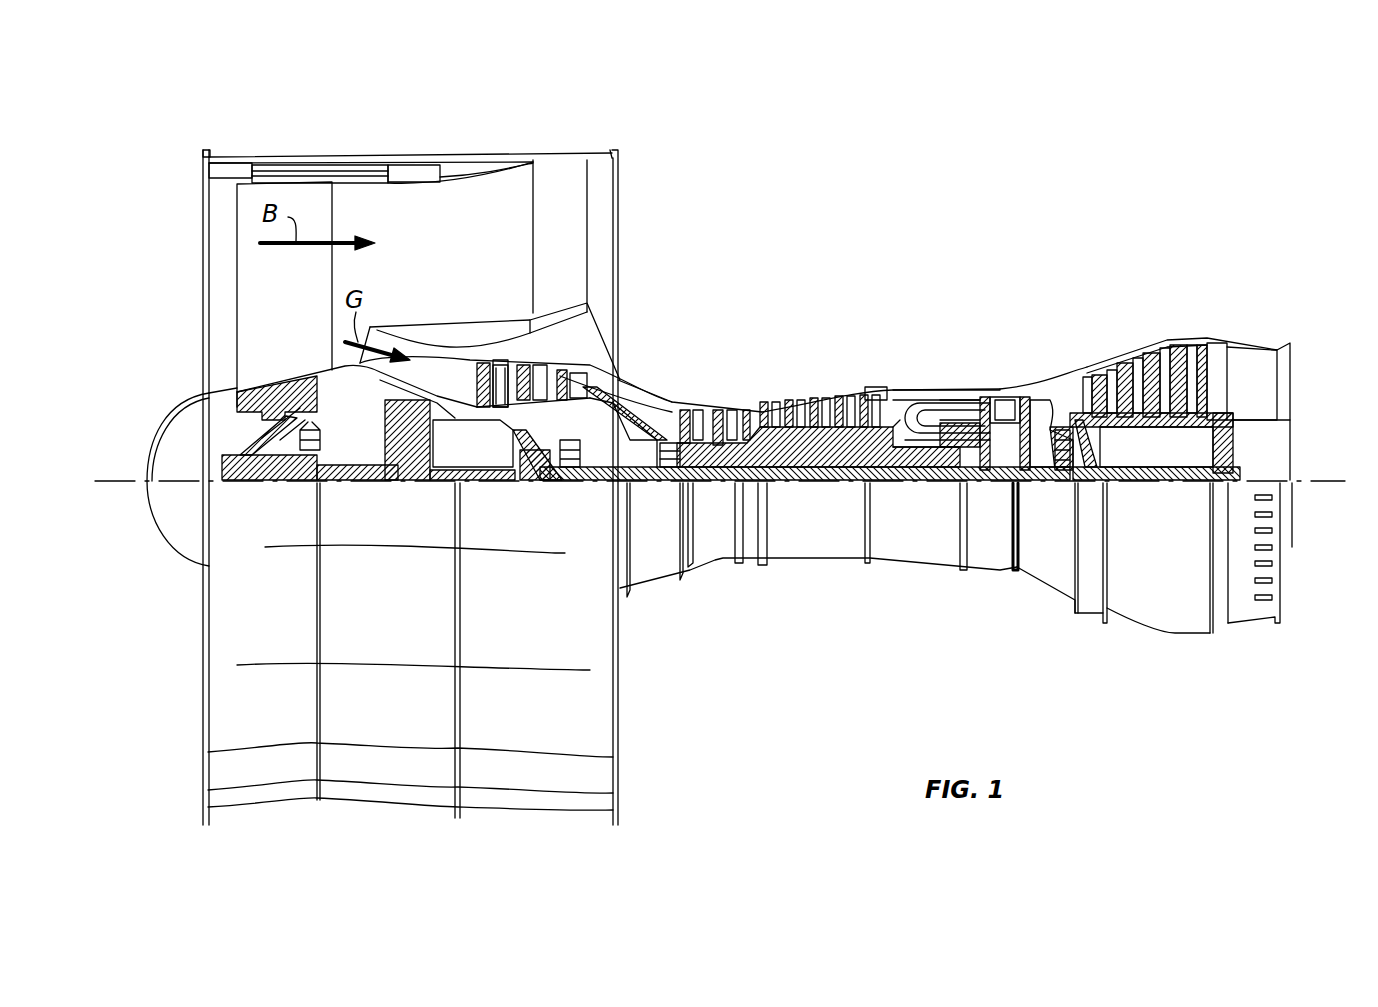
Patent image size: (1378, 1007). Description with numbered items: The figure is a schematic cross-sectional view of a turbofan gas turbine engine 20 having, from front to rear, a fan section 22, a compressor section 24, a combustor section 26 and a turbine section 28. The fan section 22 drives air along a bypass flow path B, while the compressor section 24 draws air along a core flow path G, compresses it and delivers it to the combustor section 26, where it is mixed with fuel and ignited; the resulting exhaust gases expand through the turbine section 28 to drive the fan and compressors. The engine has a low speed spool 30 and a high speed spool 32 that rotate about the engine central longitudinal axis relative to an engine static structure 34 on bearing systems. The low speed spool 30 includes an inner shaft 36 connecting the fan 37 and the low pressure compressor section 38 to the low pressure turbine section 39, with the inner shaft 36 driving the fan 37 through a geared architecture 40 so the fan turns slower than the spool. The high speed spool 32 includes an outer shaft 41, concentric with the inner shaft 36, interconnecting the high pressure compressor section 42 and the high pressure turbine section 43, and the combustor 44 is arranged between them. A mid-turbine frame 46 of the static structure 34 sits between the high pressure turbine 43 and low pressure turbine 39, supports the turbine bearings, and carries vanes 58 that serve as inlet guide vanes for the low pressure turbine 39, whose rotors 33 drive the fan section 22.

The gas turbine engine 20 is at (935, 216).
The fan section 22 is at (330, 152).
The compressor section 24 is at (665, 387).
The combustor section 26 is at (928, 368).
The turbine section 28 is at (1108, 307).
The low speed spool 30 is at (597, 483).
The high speed spool 32 is at (843, 448).
The turbine rotors 33 is at (1185, 420).
The engine static structure 34 is at (718, 562).
The inner shaft 36 is at (640, 483).
The fan 37 is at (300, 296).
The low pressure compressor section 38 is at (527, 377).
The low pressure turbine section 39 is at (1148, 358).
The geared architecture 40 is at (414, 462).
The outer shaft 41 is at (800, 468).
The high pressure compressor section 42 is at (770, 443).
The high pressure turbine section 43 is at (997, 397).
The combustor 44 is at (930, 415).
The mid-turbine frame 46 is at (1055, 376).
The vanes 58 is at (1050, 405).